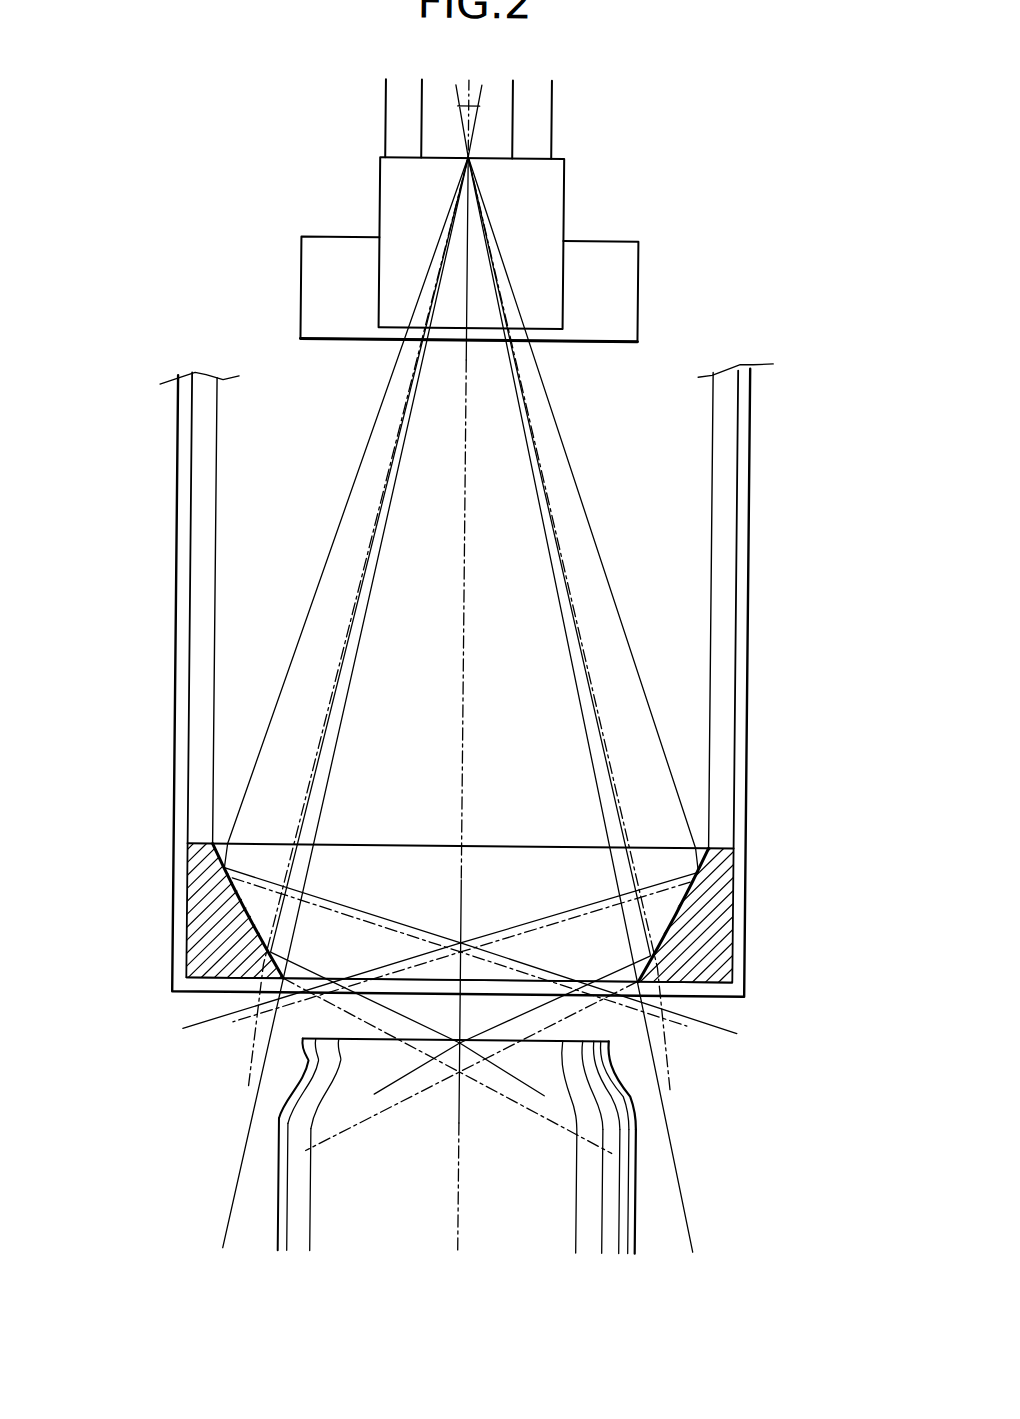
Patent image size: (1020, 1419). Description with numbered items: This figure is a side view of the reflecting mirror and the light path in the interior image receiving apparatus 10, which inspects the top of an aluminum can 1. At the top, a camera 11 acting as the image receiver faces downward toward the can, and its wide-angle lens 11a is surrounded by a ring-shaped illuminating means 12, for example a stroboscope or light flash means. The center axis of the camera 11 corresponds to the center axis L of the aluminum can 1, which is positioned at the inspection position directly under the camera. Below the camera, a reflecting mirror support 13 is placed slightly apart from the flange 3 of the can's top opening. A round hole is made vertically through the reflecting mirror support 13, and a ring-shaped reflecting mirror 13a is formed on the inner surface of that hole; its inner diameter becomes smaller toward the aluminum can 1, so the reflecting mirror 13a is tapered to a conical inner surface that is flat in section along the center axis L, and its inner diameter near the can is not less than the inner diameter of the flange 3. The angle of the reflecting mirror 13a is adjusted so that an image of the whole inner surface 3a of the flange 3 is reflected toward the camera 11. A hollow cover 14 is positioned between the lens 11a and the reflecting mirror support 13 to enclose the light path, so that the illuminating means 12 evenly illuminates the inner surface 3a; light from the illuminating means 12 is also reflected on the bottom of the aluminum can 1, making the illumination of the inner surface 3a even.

The aluminum can 1 is at (655, 1212).
The flange 3 is at (612, 1056).
The inner surface of the flange 3a is at (312, 1074).
The interior image receiving apparatus 10 is at (186, 305).
The camera 11 is at (415, 115).
The wide-angle lens 11a is at (559, 185).
The illuminating means 12 is at (634, 284).
The reflecting mirror support 13 is at (189, 947).
The reflecting mirror 13a is at (257, 908).
The hollow cover 14 is at (176, 537).
The center axis L is at (463, 1228).